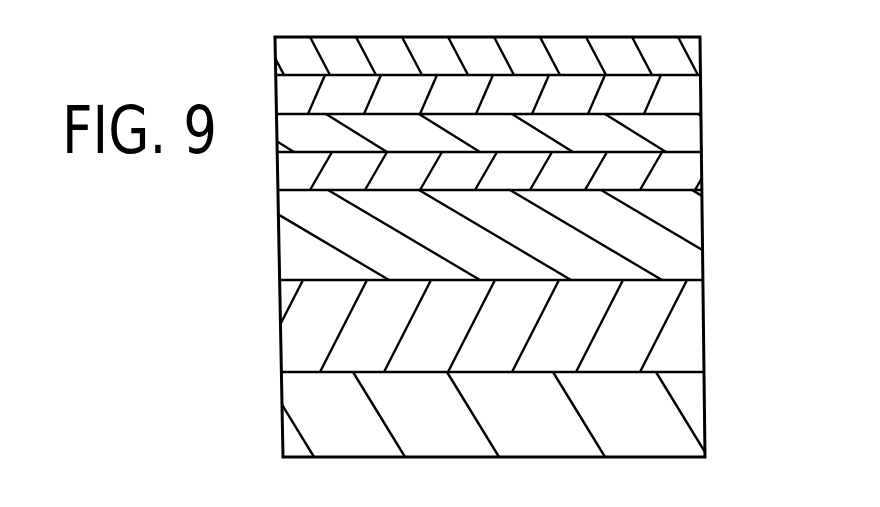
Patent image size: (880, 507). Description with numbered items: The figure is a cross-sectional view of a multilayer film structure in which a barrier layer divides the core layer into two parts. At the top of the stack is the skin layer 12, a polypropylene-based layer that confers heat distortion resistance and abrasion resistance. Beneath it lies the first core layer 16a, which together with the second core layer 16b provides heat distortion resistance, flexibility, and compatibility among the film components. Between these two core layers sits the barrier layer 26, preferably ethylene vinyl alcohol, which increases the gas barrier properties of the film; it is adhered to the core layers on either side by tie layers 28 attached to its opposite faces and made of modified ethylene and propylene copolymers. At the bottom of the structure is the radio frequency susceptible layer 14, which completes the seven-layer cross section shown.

The skin layer 12 is at (680, 60).
The core layer 16a is at (680, 98).
The tie layers 28 is at (683, 137).
The barrier layer 26 is at (687, 158).
The core layer 16b is at (687, 332).
The radio frequency susceptible layer 14 is at (697, 407).